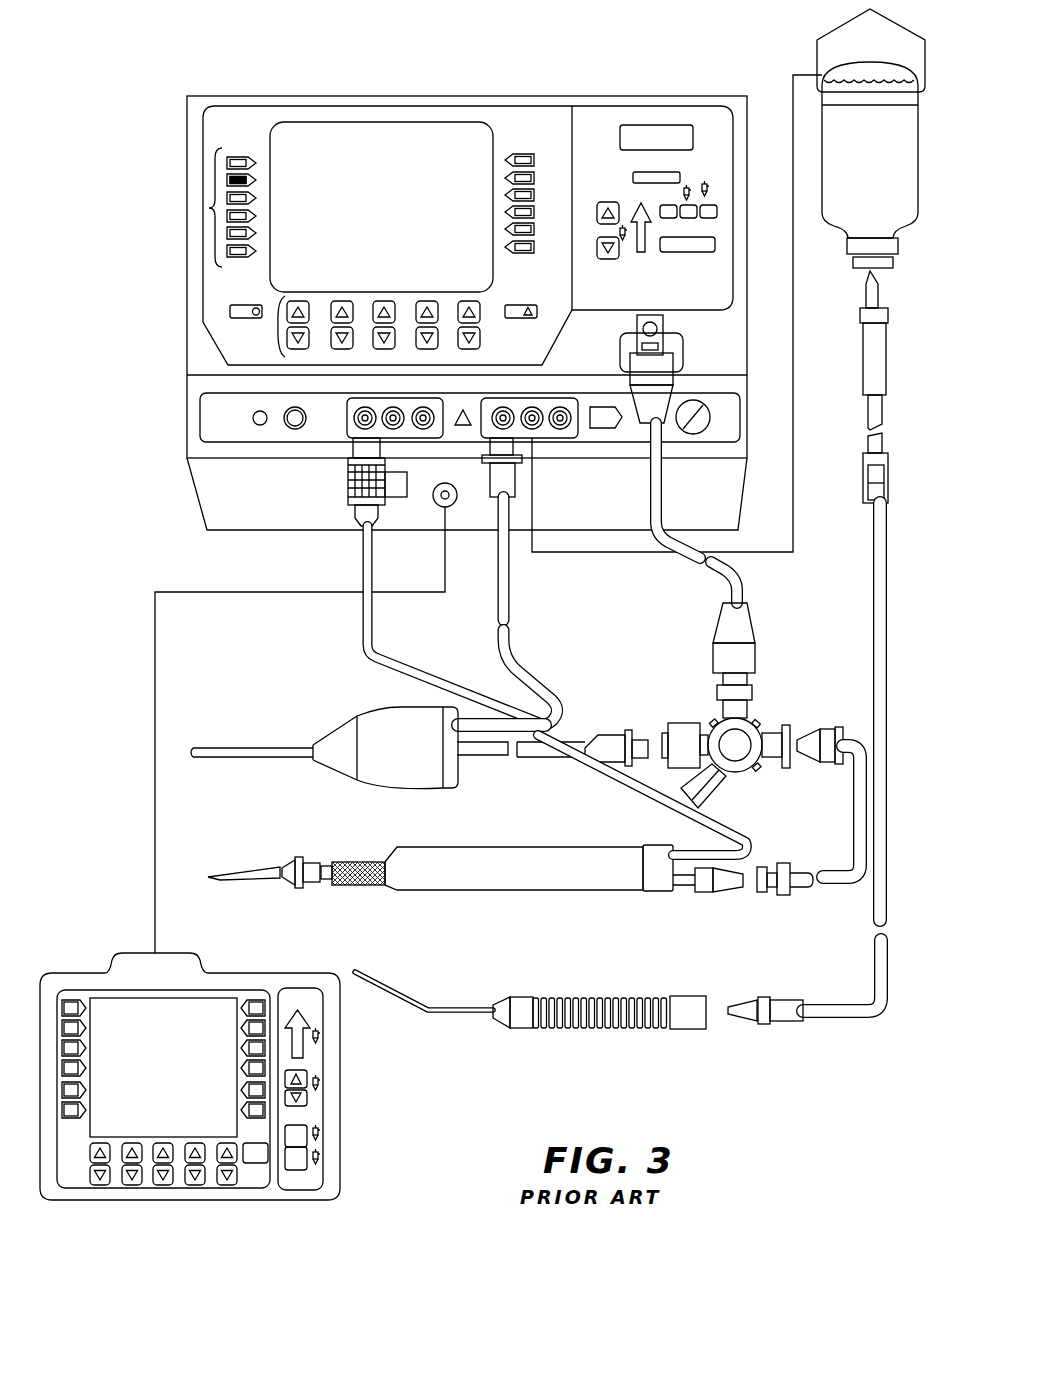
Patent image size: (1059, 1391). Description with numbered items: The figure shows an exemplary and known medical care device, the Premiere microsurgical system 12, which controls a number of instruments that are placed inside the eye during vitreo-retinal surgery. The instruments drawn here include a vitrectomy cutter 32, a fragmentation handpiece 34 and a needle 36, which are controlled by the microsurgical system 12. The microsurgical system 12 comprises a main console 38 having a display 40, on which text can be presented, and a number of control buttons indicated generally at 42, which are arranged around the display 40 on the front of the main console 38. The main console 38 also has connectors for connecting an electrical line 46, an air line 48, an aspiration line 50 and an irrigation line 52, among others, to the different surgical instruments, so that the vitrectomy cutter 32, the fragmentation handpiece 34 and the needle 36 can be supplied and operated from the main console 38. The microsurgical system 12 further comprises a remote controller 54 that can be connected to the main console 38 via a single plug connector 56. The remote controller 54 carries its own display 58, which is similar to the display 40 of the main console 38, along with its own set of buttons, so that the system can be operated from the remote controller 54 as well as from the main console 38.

The microsurgical system 12 is at (320, 73).
The main console 38 is at (612, 99).
The display 40 is at (438, 126).
The control buttons 42 is at (209, 208).
The electrical line 46 is at (428, 677).
The air line 48 is at (532, 680).
The aspiration line 50 is at (747, 590).
The irrigation line 52 is at (873, 630).
The single plug connector 56 is at (455, 503).
The vitrectomy cutter 32 is at (461, 776).
The fragmentation handpiece 34 is at (503, 893).
The needle 36 is at (665, 994).
The remote controller 54 is at (216, 1059).
The display 58 is at (220, 1003).